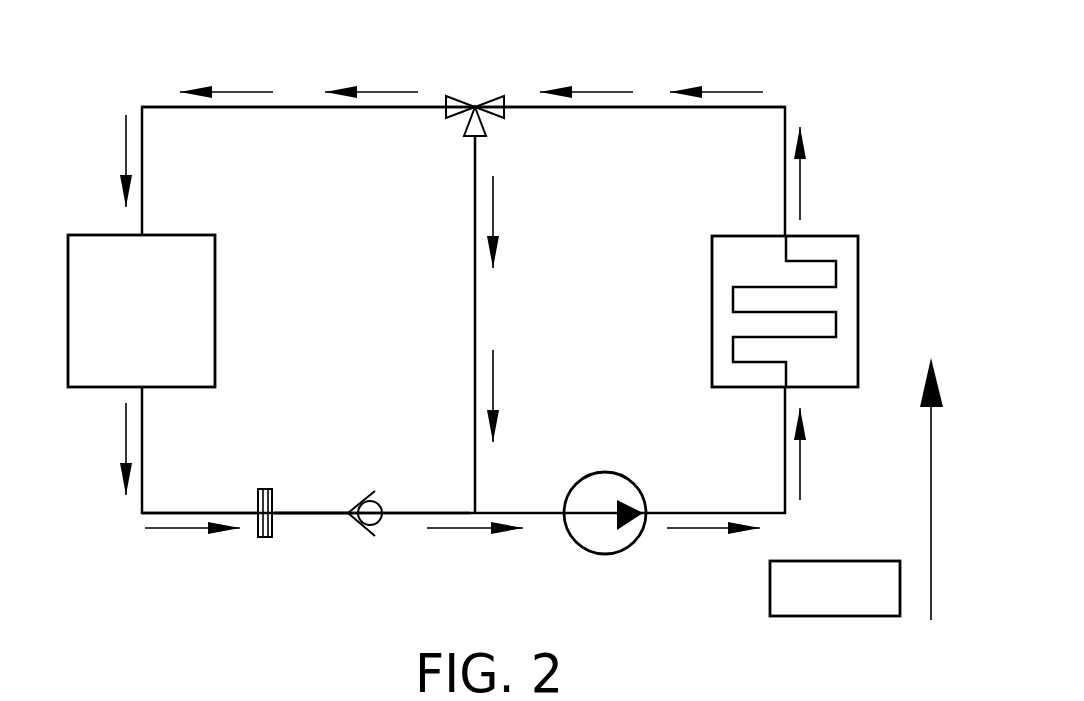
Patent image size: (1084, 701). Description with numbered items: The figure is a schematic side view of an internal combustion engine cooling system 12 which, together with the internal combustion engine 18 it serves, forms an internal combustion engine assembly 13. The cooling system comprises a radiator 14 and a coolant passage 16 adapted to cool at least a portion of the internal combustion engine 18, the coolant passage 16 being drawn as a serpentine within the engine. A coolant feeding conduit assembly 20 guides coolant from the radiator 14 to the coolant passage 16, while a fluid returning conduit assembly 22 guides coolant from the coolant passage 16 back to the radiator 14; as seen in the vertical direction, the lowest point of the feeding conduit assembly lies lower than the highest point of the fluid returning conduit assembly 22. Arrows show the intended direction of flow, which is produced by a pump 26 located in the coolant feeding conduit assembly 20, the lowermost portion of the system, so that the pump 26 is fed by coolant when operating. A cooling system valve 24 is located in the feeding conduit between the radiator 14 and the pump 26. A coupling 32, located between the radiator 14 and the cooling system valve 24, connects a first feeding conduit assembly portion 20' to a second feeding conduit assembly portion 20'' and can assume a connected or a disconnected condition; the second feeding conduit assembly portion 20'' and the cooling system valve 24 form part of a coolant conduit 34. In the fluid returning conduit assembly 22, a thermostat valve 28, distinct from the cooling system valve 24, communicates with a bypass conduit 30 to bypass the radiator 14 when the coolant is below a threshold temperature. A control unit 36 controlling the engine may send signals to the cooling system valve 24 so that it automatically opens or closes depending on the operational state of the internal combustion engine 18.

The internal combustion engine cooling system 12 is at (818, 56).
The internal combustion engine assembly 13 is at (858, 93).
The radiator 14 is at (97, 236).
The coolant passage 16 is at (837, 323).
The internal combustion engine 18 is at (828, 236).
The coolant feeding conduit assembly 20 is at (421, 369).
The first feeding conduit assembly portion 20' is at (190, 565).
The second feeding conduit assembly portion 20'' is at (301, 565).
The fluid returning conduit assembly 22 is at (292, 107).
The cooling system valve 24 is at (363, 528).
The pump 26 is at (607, 555).
The thermostat valve 28 is at (490, 107).
The bypass conduit 30 is at (476, 322).
The coupling 32 is at (262, 538).
The coolant conduit 34 is at (275, 480).
The control unit 36 is at (835, 588).